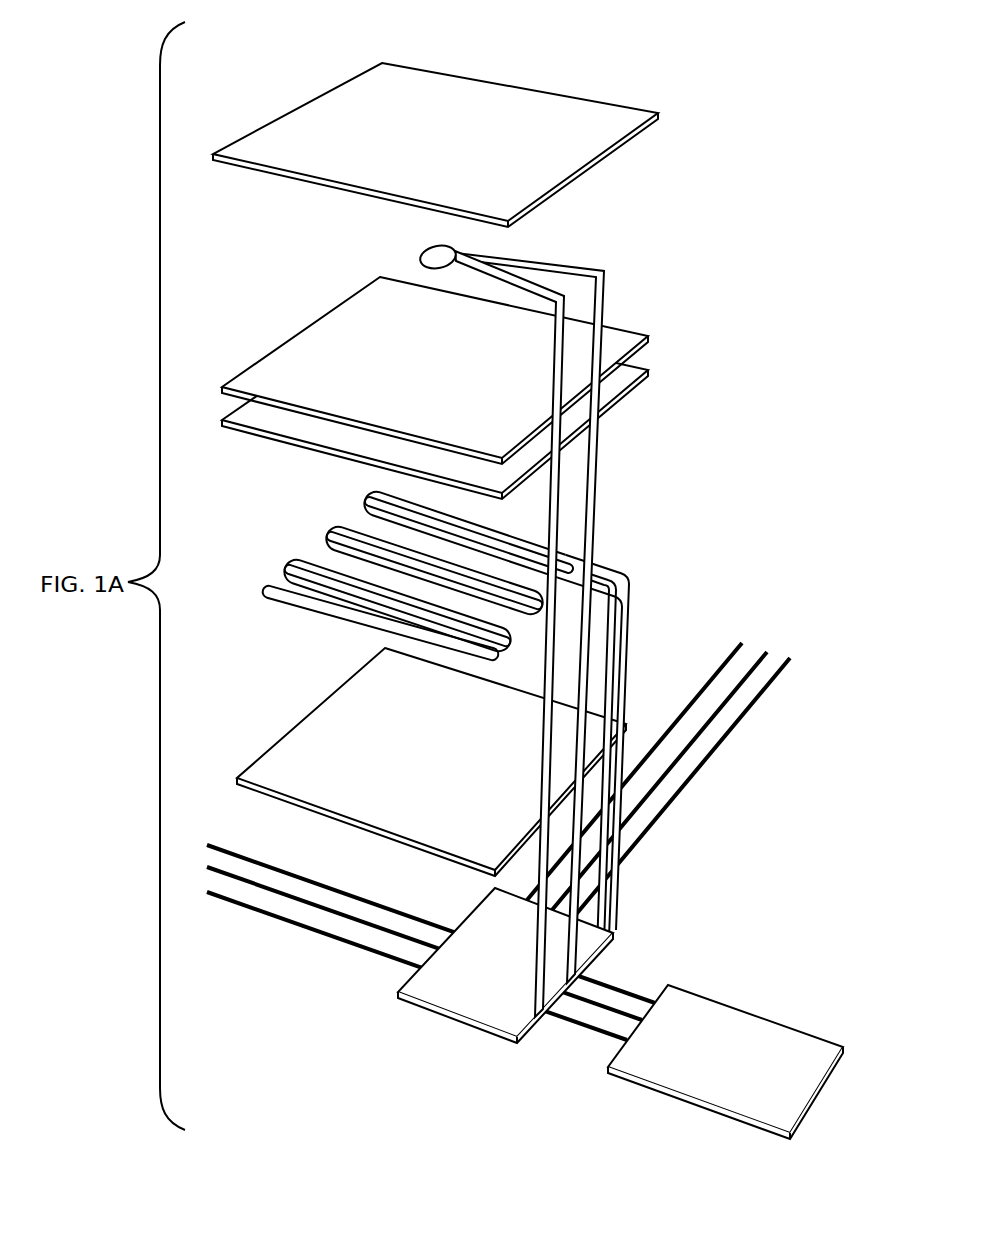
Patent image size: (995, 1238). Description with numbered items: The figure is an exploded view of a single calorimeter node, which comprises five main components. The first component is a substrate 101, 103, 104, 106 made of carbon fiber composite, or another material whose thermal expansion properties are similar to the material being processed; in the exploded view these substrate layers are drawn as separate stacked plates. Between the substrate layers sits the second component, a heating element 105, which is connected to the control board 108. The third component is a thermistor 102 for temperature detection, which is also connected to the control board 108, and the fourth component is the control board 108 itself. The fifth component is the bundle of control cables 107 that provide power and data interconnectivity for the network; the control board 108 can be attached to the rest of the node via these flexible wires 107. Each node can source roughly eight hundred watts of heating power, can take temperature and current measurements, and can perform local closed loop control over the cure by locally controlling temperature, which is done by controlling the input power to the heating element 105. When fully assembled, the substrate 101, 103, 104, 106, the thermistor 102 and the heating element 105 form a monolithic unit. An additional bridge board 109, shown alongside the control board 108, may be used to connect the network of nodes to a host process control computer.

The substrate 101 is at (602, 113).
The thermistor 102 is at (422, 249).
The substrate 103 is at (630, 337).
The substrate 104 is at (632, 375).
The heating element 105 is at (375, 477).
The substrate 106 is at (285, 747).
The control cables 107 is at (328, 940).
The control board 108 is at (468, 1010).
The bridge board 109 is at (708, 1008).